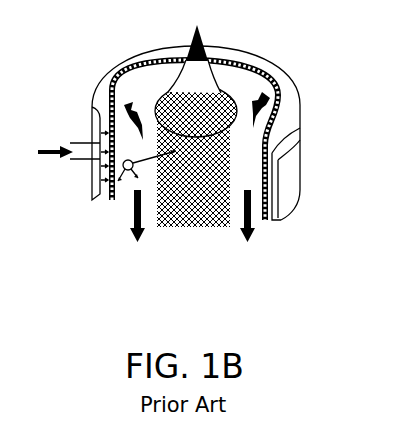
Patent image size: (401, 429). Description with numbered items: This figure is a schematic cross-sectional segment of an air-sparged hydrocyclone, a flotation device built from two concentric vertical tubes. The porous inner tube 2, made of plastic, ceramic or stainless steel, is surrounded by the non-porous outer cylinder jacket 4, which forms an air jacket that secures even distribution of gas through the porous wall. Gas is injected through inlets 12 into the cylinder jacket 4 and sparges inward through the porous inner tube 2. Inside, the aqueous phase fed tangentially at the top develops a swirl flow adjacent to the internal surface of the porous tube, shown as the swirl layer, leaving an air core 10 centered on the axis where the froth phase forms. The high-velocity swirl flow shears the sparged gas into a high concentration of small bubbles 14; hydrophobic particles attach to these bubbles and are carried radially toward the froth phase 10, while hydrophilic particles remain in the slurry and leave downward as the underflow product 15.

The porous inner tube 2 is at (278, 93).
The outer cylinder jacket 4 is at (300, 145).
The air core 10 is at (177, 88).
The gas inlets 12 is at (65, 150).
The small bubbles 14 is at (123, 170).
The underflow product 15 is at (248, 242).